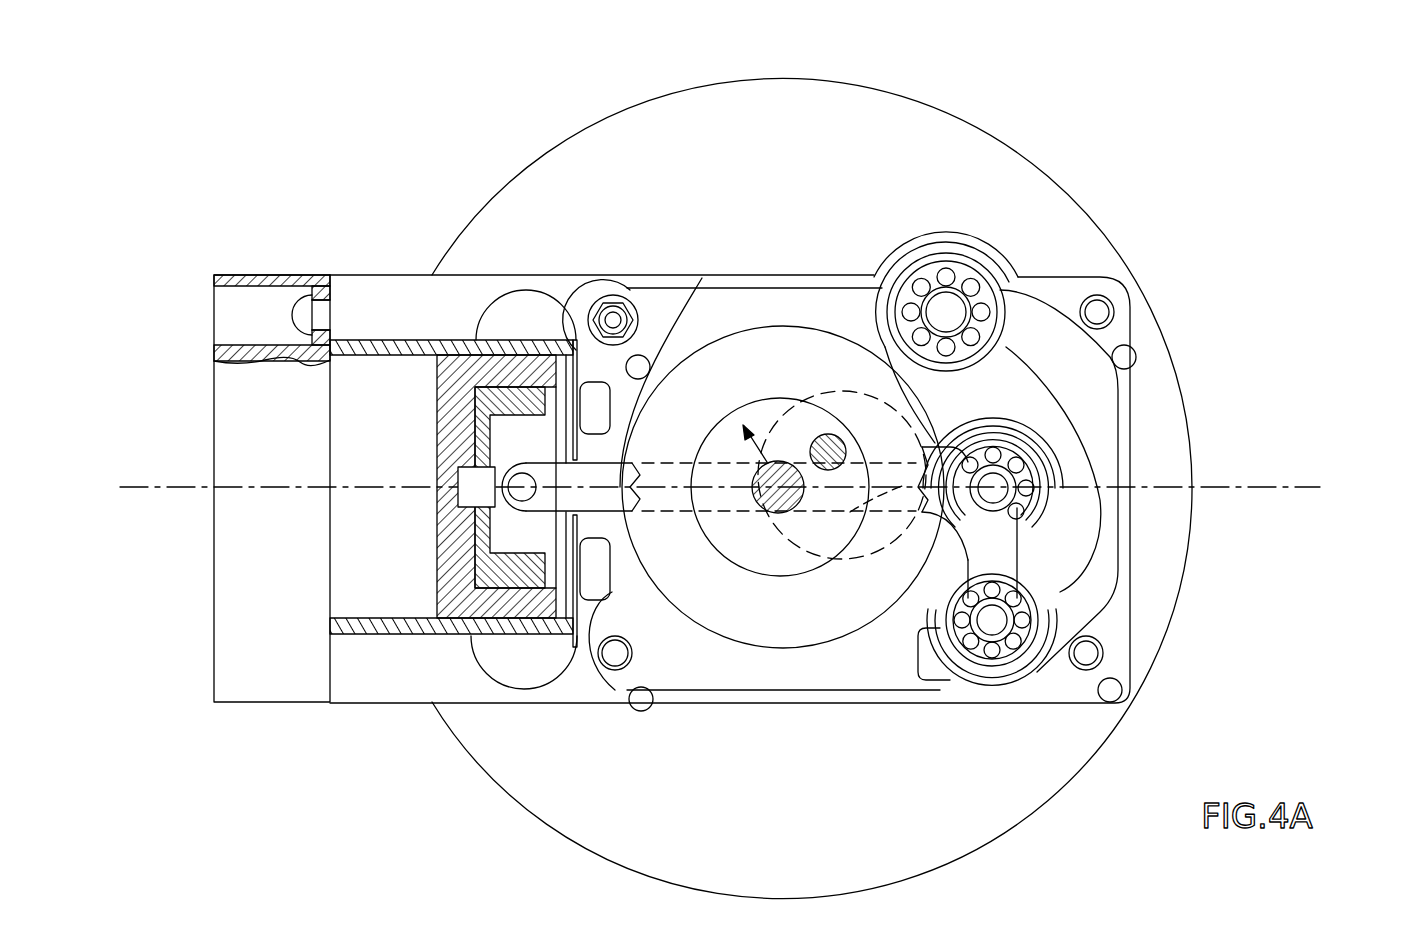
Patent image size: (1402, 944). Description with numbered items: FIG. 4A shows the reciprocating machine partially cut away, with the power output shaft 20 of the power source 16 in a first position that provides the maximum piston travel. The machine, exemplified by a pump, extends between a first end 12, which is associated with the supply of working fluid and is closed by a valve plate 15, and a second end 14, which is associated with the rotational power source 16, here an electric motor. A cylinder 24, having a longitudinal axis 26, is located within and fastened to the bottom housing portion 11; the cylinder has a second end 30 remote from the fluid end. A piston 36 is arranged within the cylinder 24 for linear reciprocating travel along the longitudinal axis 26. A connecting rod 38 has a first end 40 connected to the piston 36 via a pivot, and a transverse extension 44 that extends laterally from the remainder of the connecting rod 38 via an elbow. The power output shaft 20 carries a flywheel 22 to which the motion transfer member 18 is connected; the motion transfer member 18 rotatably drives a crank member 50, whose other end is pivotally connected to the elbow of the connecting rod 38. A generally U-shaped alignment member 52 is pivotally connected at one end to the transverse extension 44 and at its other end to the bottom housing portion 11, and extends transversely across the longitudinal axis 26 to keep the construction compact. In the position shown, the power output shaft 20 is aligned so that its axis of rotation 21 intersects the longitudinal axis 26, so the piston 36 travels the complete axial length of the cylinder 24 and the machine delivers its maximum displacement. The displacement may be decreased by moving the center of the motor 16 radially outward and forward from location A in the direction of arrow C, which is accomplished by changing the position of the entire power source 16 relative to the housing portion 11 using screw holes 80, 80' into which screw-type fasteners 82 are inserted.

The bottom housing portion 11 is at (1123, 427).
The first end 12 is at (252, 256).
The second end 14 is at (1252, 402).
The valve plate 15 is at (228, 622).
The power source 16 is at (792, 100).
The motion transfer member 18 is at (828, 435).
The power output shaft 20 is at (768, 510).
The axis of rotation 21 is at (797, 562).
The flywheel 22 is at (791, 510).
The cylinder 24 is at (363, 340).
The longitudinal axis 26 is at (1218, 490).
The second end 30 is at (590, 388).
The piston 36 is at (432, 340).
The connecting rod 38 is at (687, 463).
The first end 40 is at (540, 512).
The transverse extension 44 is at (1000, 563).
The crank member 50 is at (1050, 353).
The alignment member 52 is at (937, 440).
The screw hole 80 is at (870, 503).
The screw hole 80' is at (907, 558).
The screw-type fastener 82 is at (613, 320).